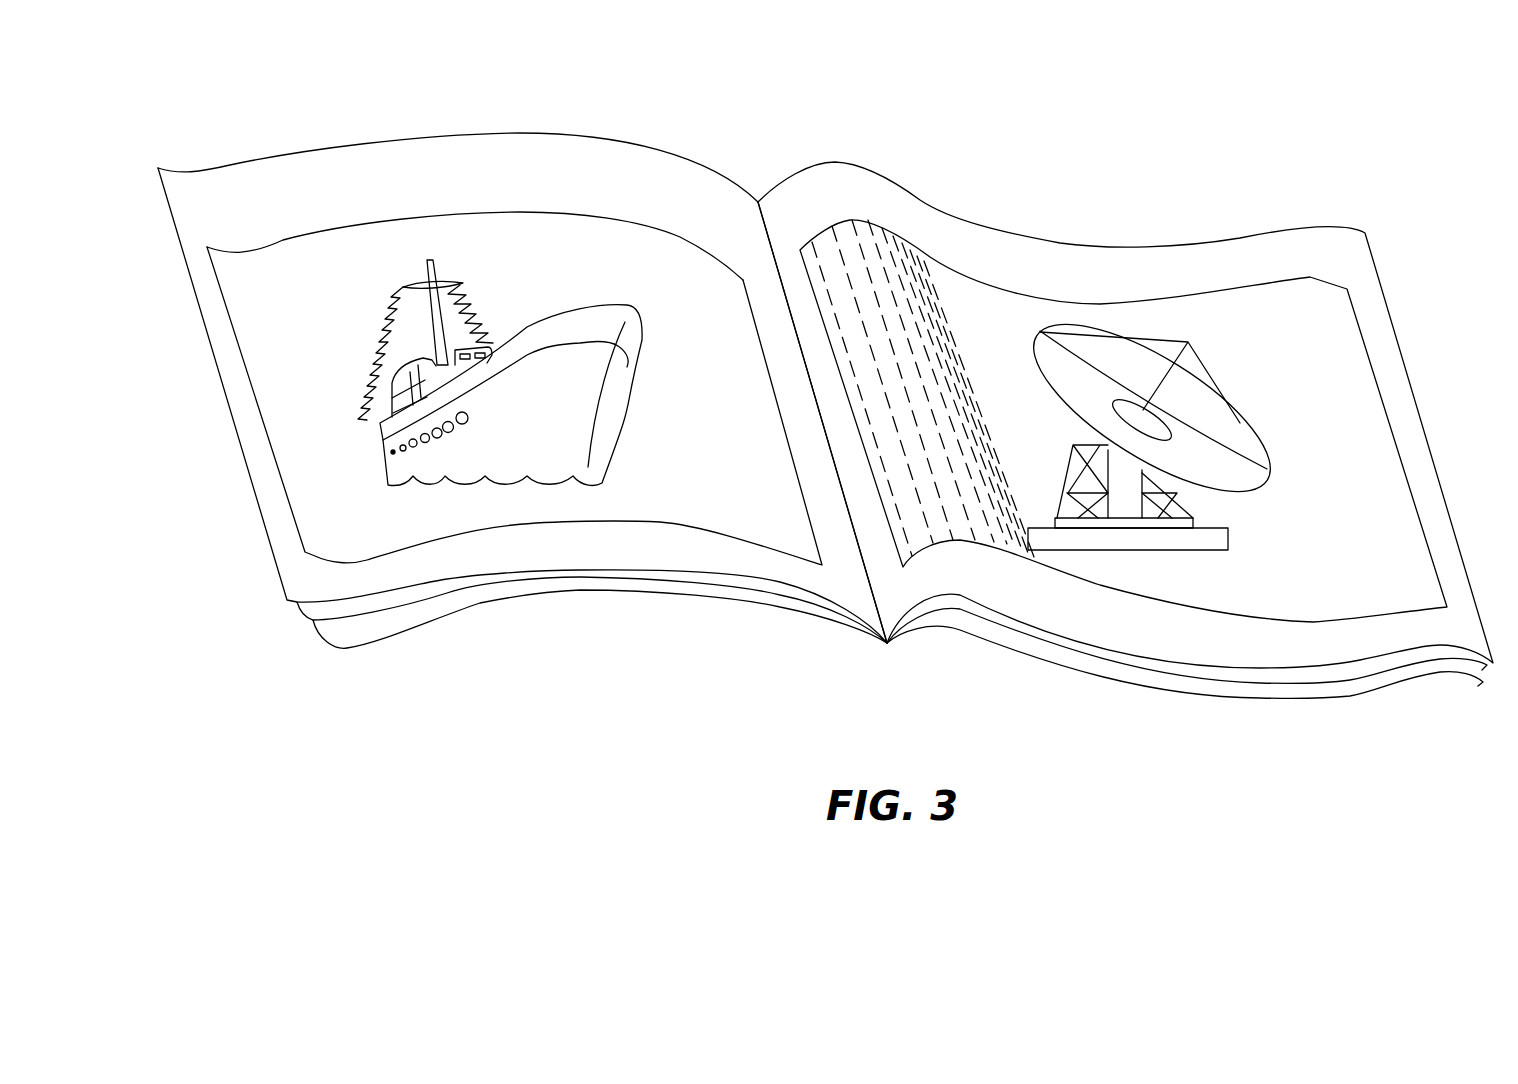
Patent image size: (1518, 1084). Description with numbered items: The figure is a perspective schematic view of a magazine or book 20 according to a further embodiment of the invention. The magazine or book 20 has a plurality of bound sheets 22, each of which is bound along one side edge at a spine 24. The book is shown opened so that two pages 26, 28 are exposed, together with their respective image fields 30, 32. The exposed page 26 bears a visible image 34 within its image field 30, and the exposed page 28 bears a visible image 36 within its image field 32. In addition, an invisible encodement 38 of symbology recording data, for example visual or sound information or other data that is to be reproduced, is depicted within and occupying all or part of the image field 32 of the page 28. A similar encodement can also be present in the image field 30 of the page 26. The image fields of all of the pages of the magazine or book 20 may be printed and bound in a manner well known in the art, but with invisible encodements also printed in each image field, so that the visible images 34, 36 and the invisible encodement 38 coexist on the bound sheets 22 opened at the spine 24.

The magazine or book 20 is at (536, 82).
The bound sheets 22 is at (287, 633).
The spine 24 is at (884, 645).
The page 26 is at (390, 178).
The page 28 is at (1150, 267).
The image field 30 is at (500, 530).
The image field 32 is at (1323, 623).
The visible image 34 is at (643, 343).
The visible image 36 is at (1250, 403).
The invisible encodement 38 is at (847, 277).